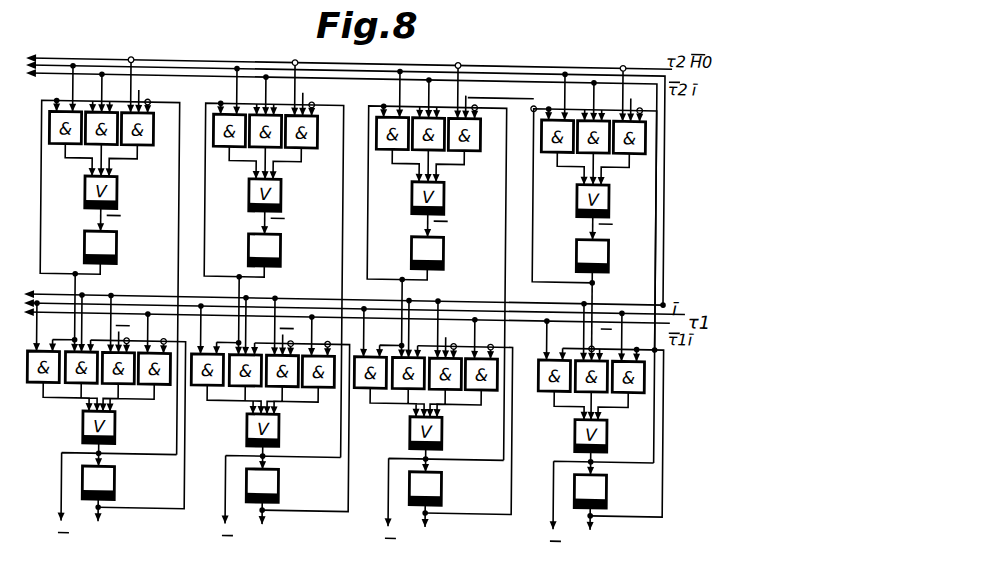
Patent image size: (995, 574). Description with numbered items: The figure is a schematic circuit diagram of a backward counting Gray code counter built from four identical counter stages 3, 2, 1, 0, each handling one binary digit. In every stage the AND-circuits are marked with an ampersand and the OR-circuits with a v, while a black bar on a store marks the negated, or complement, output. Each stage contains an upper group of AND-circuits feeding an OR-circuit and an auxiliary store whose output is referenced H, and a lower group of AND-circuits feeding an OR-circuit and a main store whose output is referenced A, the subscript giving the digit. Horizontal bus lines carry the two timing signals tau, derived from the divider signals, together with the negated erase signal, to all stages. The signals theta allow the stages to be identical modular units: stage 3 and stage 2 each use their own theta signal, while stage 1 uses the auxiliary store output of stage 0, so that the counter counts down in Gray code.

The counter stage 3 is at (107, 306).
The counter stage 2 is at (271, 309).
The counter stage 1 is at (434, 312).
The counter stage 0 is at (598, 315).